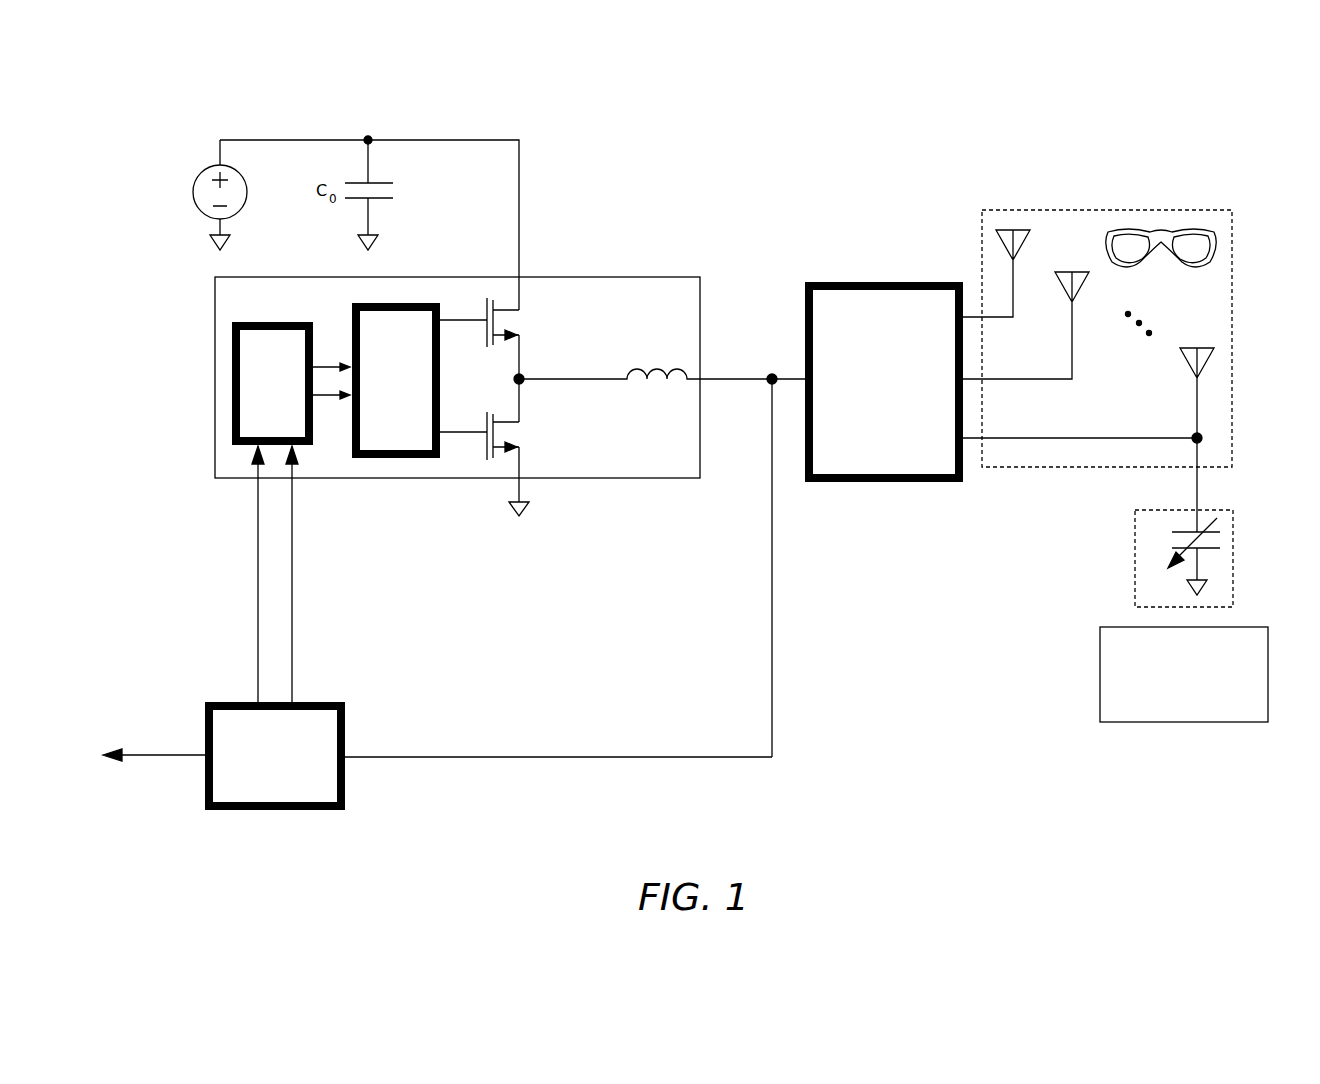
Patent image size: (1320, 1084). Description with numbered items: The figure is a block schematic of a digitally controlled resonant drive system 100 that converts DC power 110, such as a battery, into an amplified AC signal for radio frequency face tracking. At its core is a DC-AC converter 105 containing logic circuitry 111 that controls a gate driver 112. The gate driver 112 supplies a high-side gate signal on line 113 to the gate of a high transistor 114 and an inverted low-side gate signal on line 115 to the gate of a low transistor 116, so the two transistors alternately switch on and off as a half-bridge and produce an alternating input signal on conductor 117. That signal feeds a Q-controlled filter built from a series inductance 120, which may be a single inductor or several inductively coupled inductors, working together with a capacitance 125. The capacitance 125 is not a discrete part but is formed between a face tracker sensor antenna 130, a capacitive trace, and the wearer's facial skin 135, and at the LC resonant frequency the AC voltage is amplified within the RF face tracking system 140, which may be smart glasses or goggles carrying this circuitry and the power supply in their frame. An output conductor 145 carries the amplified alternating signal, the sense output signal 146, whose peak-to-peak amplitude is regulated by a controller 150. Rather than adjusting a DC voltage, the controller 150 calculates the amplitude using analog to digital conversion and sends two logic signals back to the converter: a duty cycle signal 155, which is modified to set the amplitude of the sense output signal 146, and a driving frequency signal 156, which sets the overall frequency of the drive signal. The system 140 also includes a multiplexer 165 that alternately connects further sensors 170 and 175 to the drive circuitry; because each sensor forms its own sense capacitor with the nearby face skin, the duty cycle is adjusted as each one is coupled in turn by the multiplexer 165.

The digitally controlled resonant drive system 100 is at (1222, 108).
The DC-AC converter 105 is at (680, 278).
The DC power 110 is at (200, 170).
The logic circuitry 111 is at (290, 322).
The gate driver 112 is at (385, 458).
The line 113 is at (465, 320).
The high transistor M1 114 is at (510, 308).
The line 115 is at (470, 433).
The low transistor M2 116 is at (510, 452).
The conductor 117 is at (523, 378).
The series inductance 120 is at (652, 385).
The capacitance 125 is at (1208, 553).
The face tracker sensor antenna 130 is at (1192, 348).
The facial skin 135 is at (1240, 722).
The RF face tracking system 140 is at (1200, 210).
The output conductor 145 is at (772, 757).
The SENSE_OUT output signal 146 is at (435, 757).
The controller 150 is at (205, 810).
The duty cycle signal DutyCycle_RFFT 155 is at (257, 685).
The driving frequency signal RFFT_FREQ 156 is at (292, 511).
The multiplexer 165 is at (845, 282).
The sensor 170 is at (1000, 230).
The sensor 175 is at (1070, 272).